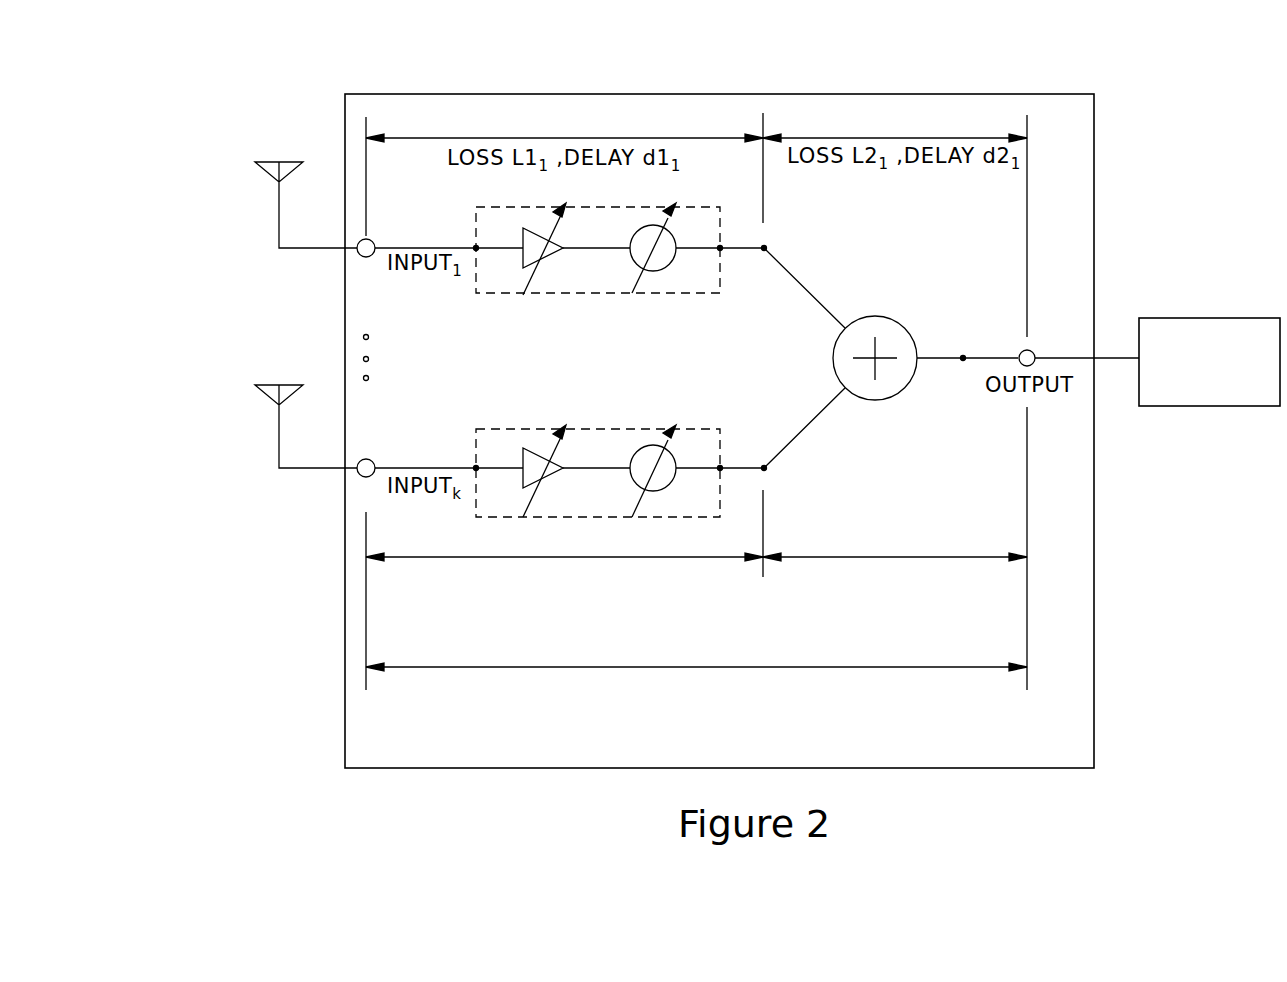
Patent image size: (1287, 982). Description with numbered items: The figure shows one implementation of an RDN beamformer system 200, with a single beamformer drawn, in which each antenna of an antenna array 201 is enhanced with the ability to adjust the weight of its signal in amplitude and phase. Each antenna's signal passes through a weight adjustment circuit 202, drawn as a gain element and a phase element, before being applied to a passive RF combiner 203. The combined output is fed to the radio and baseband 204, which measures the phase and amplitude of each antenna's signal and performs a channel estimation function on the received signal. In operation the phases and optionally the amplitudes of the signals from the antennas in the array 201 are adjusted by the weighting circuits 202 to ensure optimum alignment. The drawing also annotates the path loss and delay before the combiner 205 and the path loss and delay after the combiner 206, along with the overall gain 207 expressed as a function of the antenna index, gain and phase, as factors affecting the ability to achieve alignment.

The receive diversity network (RDN) 200 is at (425, 88).
The antenna array 201 is at (215, 224).
The weight adjustment circuit 202 is at (524, 428).
The passive RF combiner 203 is at (896, 322).
The radio and baseband 204 is at (1218, 318).
The loss L1k, delay d1k path segment 205 is at (604, 603).
The loss L2k, delay d2k path segment 206 is at (856, 603).
The gain G(k,g,p) 207 is at (679, 714).